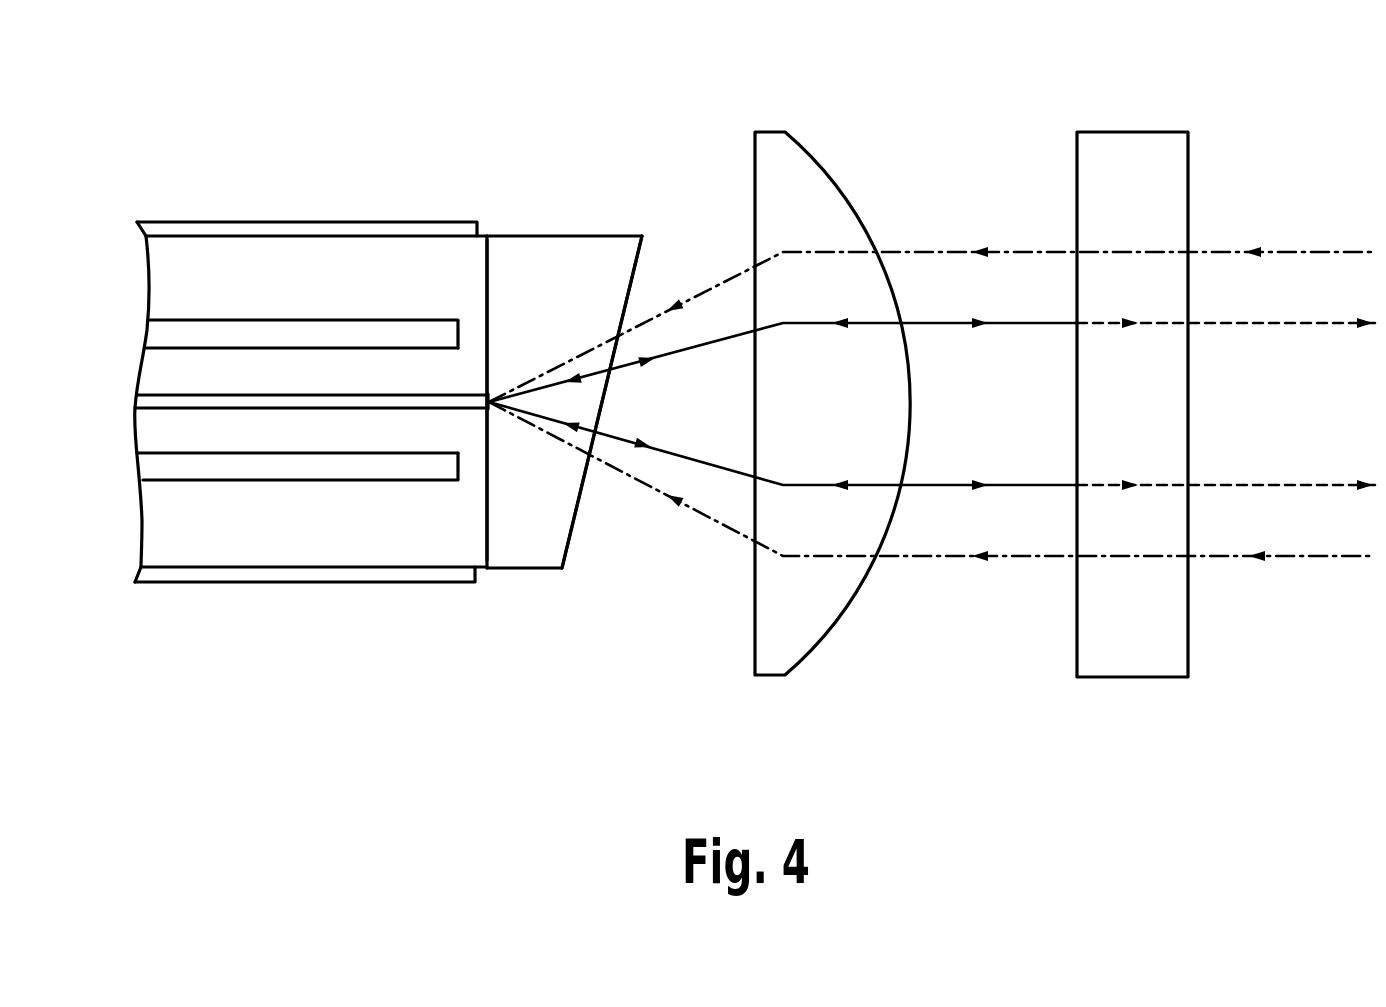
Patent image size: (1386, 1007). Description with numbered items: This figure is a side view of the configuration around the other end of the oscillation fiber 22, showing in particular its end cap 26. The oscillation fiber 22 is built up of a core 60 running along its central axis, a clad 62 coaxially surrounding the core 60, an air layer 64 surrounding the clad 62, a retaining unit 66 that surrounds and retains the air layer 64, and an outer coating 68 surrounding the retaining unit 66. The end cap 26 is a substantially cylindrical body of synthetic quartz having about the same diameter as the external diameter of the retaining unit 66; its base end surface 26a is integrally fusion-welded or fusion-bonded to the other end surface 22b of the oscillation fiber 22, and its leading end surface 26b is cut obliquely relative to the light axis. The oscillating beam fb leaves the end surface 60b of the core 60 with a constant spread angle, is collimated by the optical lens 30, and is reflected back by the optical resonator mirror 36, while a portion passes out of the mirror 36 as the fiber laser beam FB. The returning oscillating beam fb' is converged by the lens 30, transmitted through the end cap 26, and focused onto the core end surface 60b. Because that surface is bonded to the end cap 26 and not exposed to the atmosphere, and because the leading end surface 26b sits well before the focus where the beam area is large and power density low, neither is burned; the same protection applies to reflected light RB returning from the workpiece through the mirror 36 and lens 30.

The oscillation fiber 22 is at (306, 332).
The other end surface of the oscillation fiber 22b is at (491, 272).
The end cap 26 is at (598, 236).
The base end surface 26a is at (483, 258).
The leading end surface 26b is at (635, 273).
The optical lens 30 is at (784, 132).
The optical resonator mirror 36 is at (1131, 132).
The core 60 is at (203, 394).
The end surface of the core 60b is at (491, 408).
The clad 62 is at (148, 368).
The air layer 64 is at (172, 330).
The retaining unit 66 is at (308, 552).
The coating 68 is at (210, 585).
The reflected light RB is at (1012, 250).
The fiber laser beam FB is at (1257, 325).
The oscillating beam fb is at (799, 404).
The returning oscillating beam fb' is at (730, 392).